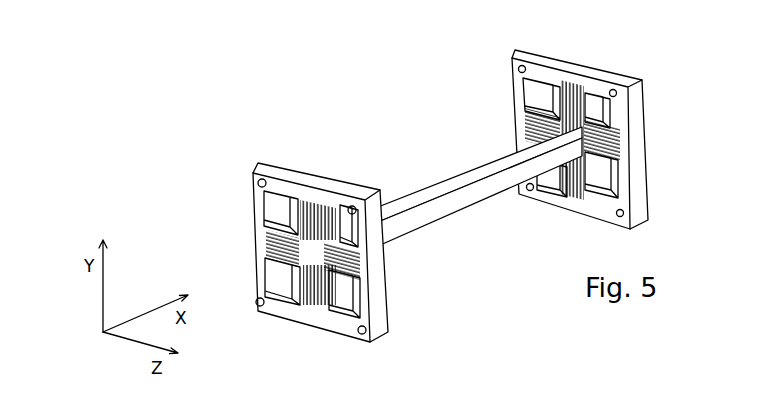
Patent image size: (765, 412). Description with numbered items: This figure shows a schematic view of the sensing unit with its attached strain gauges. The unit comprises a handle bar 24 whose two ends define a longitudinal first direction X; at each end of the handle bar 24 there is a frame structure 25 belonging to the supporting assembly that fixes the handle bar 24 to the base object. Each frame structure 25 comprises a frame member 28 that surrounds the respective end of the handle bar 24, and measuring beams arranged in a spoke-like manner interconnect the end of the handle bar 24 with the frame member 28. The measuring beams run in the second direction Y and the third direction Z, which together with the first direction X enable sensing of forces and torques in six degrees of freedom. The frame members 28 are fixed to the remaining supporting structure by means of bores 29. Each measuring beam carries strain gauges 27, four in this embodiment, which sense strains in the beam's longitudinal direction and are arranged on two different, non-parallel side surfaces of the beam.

The handle bar 24 is at (443, 207).
The frame structure 25 is at (289, 216).
The strain gauge 27 is at (303, 290).
The frame member 28 is at (342, 190).
The bore 29 is at (251, 176).